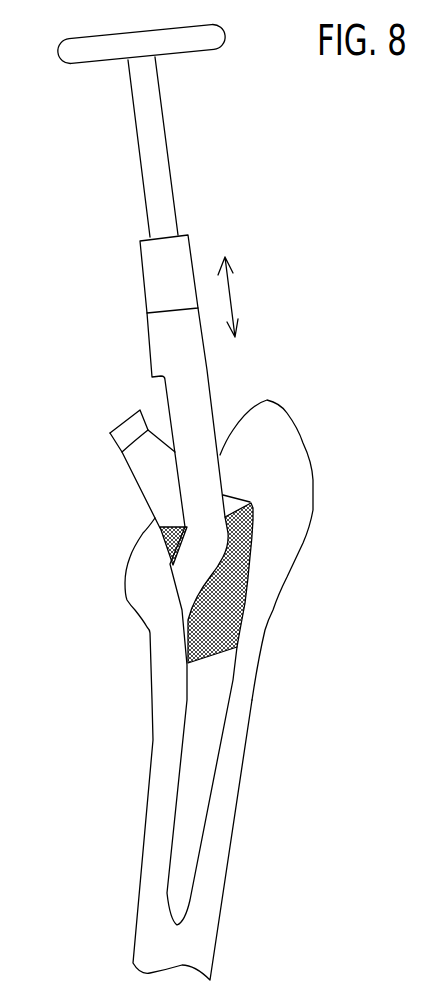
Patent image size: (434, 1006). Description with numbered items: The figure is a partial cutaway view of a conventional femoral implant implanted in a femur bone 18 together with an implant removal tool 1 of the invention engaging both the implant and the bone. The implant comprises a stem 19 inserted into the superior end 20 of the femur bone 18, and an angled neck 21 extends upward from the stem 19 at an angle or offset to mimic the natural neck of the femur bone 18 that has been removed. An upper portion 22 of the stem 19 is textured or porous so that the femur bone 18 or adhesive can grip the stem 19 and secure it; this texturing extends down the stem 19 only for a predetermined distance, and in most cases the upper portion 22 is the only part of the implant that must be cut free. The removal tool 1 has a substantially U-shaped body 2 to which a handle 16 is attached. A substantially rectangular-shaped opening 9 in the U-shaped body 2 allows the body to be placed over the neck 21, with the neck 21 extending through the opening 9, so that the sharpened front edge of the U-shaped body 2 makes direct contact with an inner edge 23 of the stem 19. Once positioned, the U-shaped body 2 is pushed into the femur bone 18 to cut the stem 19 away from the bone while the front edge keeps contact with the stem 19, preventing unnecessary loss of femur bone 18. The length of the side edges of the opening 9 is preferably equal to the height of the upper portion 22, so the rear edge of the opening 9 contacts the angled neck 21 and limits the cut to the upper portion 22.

The implant removal tool 1 is at (147, 474).
The handle 16 is at (165, 130).
The substantially rectangular-shaped opening 9 is at (168, 393).
The substantially U-shaped body 2 is at (216, 672).
The femur bone 18 is at (288, 447).
The stem 19 is at (222, 753).
The superior end 20 is at (237, 428).
The angled neck 21 is at (135, 478).
The upper portion 22 is at (243, 605).
The inner edge 23 is at (207, 625).